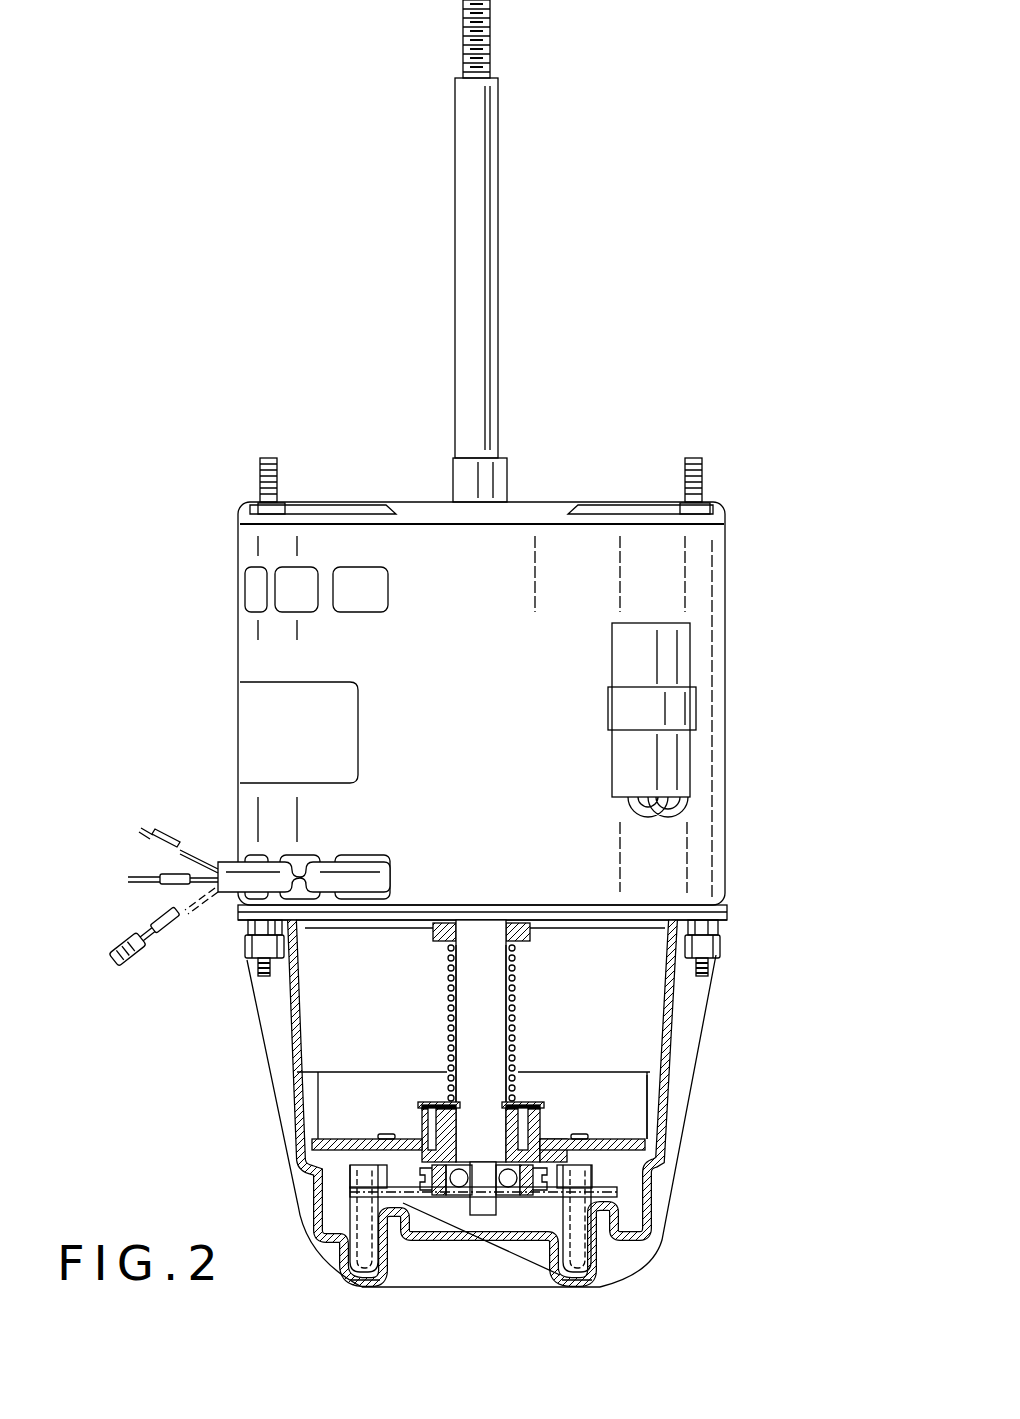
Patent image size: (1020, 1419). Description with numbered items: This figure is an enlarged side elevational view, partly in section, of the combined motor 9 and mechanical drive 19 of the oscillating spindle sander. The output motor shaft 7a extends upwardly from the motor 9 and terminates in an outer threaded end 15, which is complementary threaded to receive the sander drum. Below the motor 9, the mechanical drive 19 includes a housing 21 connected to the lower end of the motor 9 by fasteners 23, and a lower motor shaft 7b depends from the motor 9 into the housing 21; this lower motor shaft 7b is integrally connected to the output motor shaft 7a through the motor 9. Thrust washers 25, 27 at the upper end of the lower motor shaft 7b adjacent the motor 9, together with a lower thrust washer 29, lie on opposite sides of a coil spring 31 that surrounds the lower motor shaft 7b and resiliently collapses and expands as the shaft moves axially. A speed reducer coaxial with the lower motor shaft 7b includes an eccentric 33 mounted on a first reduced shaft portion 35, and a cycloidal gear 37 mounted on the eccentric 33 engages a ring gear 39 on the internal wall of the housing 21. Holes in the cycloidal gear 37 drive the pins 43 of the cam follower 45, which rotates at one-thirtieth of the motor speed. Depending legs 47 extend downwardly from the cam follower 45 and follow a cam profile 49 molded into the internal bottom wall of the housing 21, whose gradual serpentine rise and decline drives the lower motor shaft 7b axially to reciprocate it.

The output motor shaft 7a is at (478, 195).
The lower motor shaft 7b is at (485, 996).
The motor 9 is at (737, 581).
The outer threaded end 15 is at (477, 17).
The mechanical drive 19 is at (707, 1074).
The housing 21 is at (290, 1072).
The fasteners 23 is at (248, 958).
The thrust washer 25 is at (560, 927).
The thrust washer 27 is at (524, 942).
The lower thrust washer 29 is at (530, 1105).
The coil spring 31 is at (515, 1052).
The eccentric 33 is at (453, 1128).
The first reduced shaft portion 35 is at (530, 1147).
The cycloidal gear 37 is at (345, 1141).
The ring gear 39 is at (624, 1094).
The pins 43 is at (389, 1134).
The cam follower 45 is at (624, 1190).
The depending legs 47 is at (362, 1255).
The cam profile 49 is at (363, 1292).